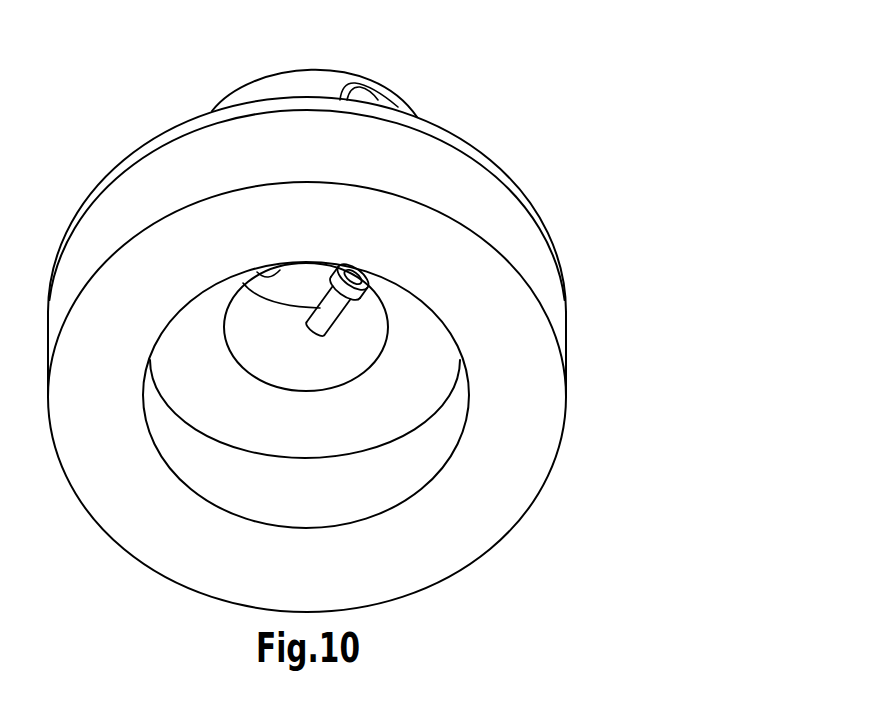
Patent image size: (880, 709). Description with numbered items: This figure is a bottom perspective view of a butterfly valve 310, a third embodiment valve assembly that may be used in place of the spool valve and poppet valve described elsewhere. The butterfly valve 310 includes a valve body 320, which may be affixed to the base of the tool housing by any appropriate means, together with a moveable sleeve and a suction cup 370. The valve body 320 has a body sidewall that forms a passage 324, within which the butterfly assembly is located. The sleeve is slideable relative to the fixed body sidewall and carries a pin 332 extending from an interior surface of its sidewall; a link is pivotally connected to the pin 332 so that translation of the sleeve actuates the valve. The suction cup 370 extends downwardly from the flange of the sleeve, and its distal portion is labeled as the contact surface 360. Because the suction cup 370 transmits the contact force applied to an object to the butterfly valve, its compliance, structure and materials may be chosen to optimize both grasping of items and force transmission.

The butterfly valve 310 is at (598, 122).
The valve body 320 is at (307, 88).
The passage 324 is at (283, 433).
The pin 332 is at (333, 316).
The contact surface 360 is at (510, 423).
The suction cup 370 is at (550, 290).